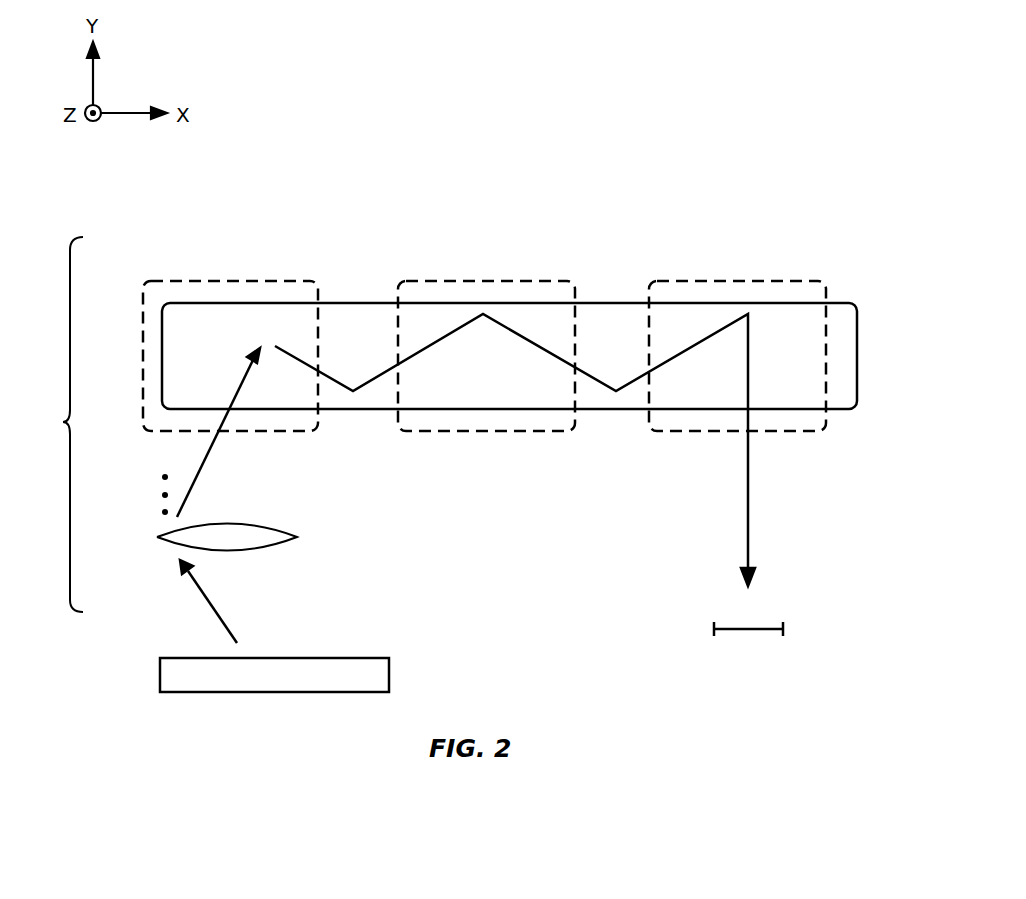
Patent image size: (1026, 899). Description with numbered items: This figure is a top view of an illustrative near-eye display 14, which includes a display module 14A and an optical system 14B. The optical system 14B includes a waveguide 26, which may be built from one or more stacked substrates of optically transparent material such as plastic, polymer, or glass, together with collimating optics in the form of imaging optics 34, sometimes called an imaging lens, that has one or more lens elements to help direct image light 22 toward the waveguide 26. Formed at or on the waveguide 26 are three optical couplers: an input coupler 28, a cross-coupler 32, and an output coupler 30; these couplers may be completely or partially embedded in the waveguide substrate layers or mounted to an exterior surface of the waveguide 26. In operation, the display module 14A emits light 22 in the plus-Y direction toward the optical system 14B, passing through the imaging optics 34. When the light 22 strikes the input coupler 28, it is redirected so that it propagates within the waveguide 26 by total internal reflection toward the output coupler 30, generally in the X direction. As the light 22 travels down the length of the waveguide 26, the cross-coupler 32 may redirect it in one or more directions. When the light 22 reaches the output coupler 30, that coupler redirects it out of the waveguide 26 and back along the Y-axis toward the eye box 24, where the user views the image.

The display 14 is at (640, 121).
The display module 14A is at (160, 673).
The optical system 14B is at (45, 424).
The light 22 is at (202, 463).
The eye box 24 is at (753, 631).
The waveguide 26 is at (857, 357).
The input coupler 28 is at (228, 280).
The output coupler 30 is at (735, 280).
The cross-coupler 32 is at (485, 280).
The imaging optics 34 is at (325, 530).